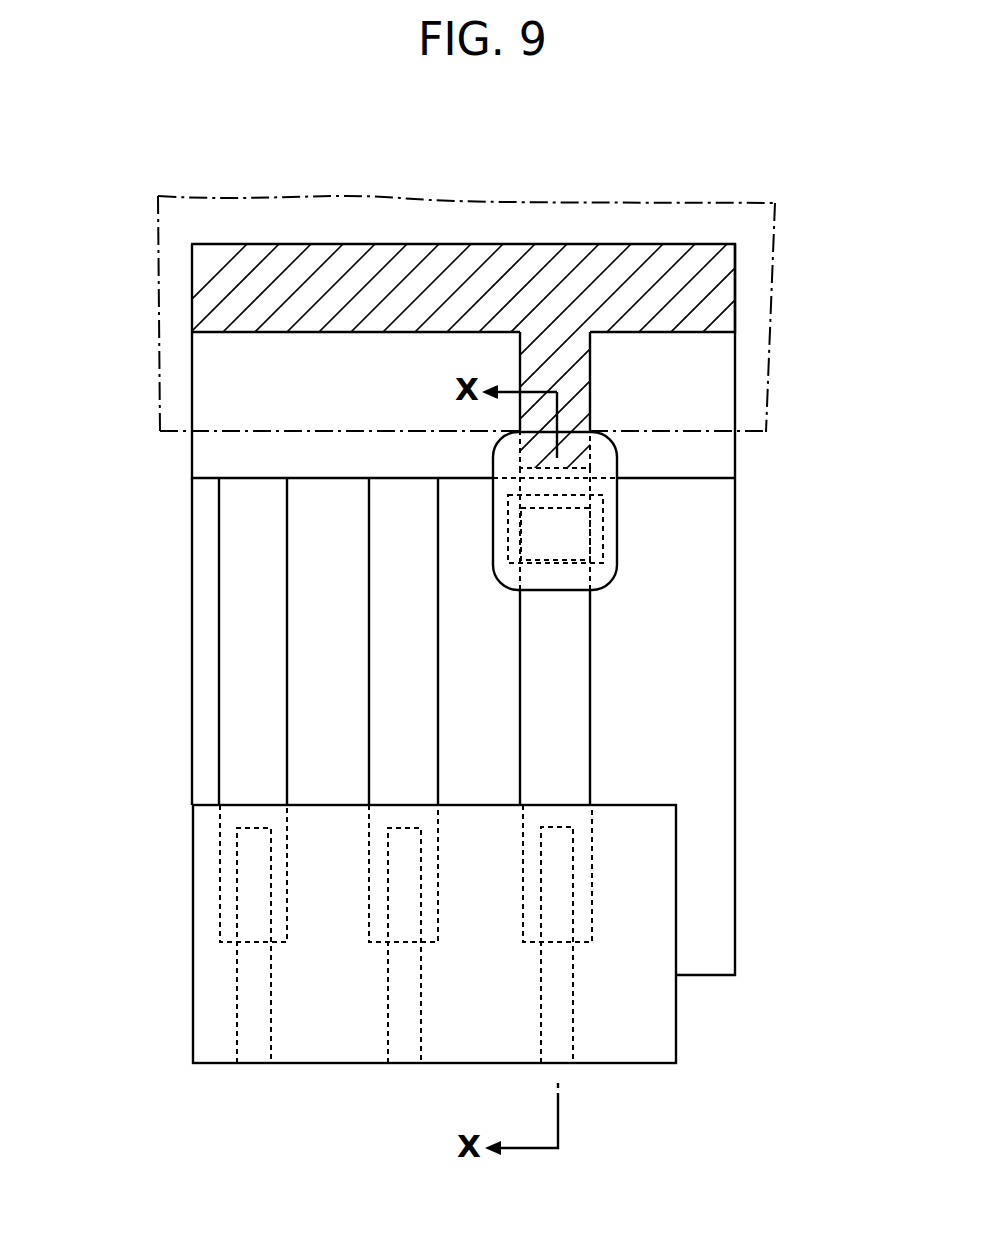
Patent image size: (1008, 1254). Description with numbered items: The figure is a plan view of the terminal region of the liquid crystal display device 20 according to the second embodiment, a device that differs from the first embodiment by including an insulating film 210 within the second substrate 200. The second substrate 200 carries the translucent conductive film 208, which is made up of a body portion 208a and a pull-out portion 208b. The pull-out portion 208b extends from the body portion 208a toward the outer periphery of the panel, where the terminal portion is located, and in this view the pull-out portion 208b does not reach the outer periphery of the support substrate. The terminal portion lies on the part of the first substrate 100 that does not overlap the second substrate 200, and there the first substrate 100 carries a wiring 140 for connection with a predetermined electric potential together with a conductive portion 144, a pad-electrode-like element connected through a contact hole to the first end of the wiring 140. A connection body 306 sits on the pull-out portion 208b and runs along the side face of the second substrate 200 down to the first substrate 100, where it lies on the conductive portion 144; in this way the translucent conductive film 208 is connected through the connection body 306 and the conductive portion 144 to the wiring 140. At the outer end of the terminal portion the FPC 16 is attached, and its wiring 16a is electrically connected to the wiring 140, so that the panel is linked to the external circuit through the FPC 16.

The liquid crystal display device 20 is at (202, 176).
The insulating film 210 is at (698, 200).
The translucent conductive film 208 is at (862, 277).
The body portion 208a is at (727, 282).
The pull-out portion 208b is at (577, 378).
The second substrate 200 is at (193, 468).
The connection body 306 is at (603, 457).
The conductive portion 144 is at (603, 537).
The wiring 140 is at (575, 653).
The first substrate 100 is at (193, 580).
The FPC 16 is at (658, 873).
The wiring of the FPC 16a is at (574, 1027).